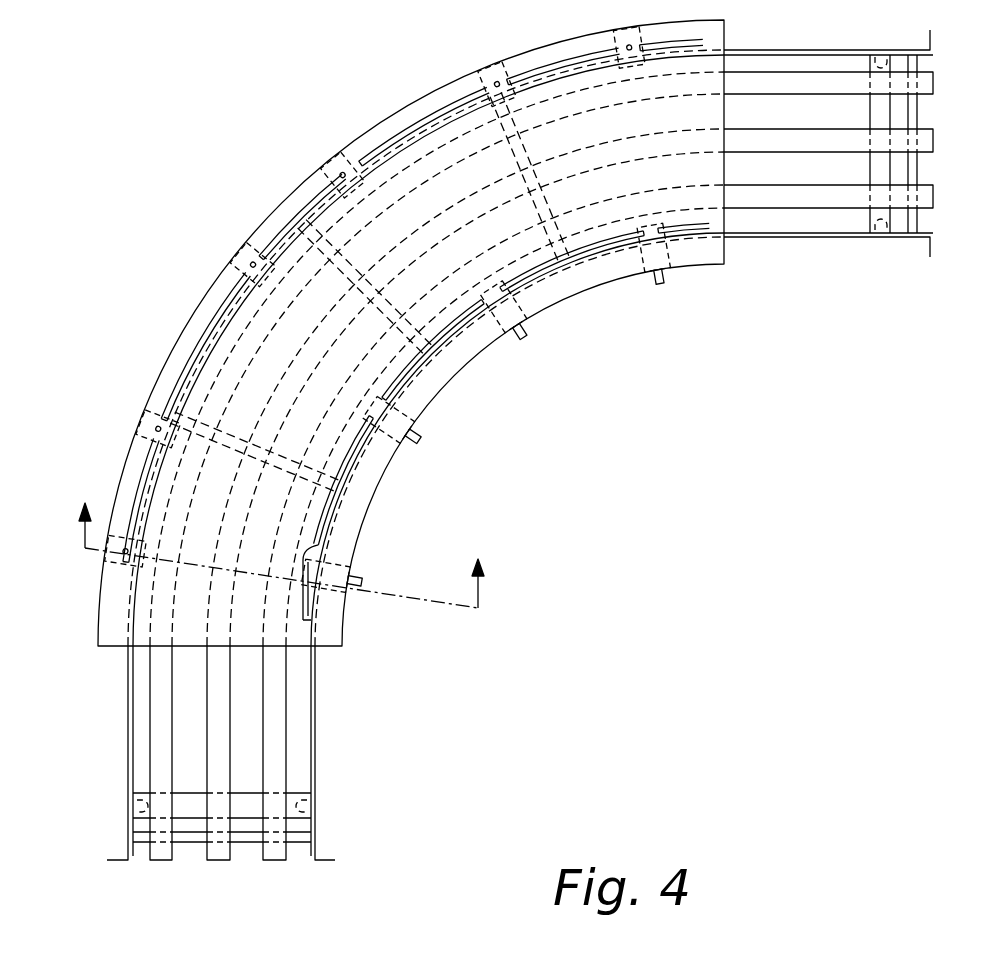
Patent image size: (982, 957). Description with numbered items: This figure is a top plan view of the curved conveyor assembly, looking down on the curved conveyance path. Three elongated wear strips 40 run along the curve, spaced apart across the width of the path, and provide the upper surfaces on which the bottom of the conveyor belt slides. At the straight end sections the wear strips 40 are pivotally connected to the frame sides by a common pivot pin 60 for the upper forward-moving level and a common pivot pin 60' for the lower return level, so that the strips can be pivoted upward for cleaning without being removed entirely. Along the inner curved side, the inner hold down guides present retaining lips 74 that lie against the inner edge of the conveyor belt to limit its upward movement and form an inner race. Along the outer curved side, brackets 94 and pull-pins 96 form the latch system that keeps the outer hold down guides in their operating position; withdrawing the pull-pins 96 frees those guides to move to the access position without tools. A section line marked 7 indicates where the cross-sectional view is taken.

The wear strips 40 is at (277, 752).
The pivot pin 60 is at (221, 789).
The pivot pin 60' is at (828, 163).
The retaining lips 74 is at (586, 244).
The brackets 94 is at (352, 160).
The pull-pins 96 is at (340, 172).
The section line 7- 7 is at (288, 541).